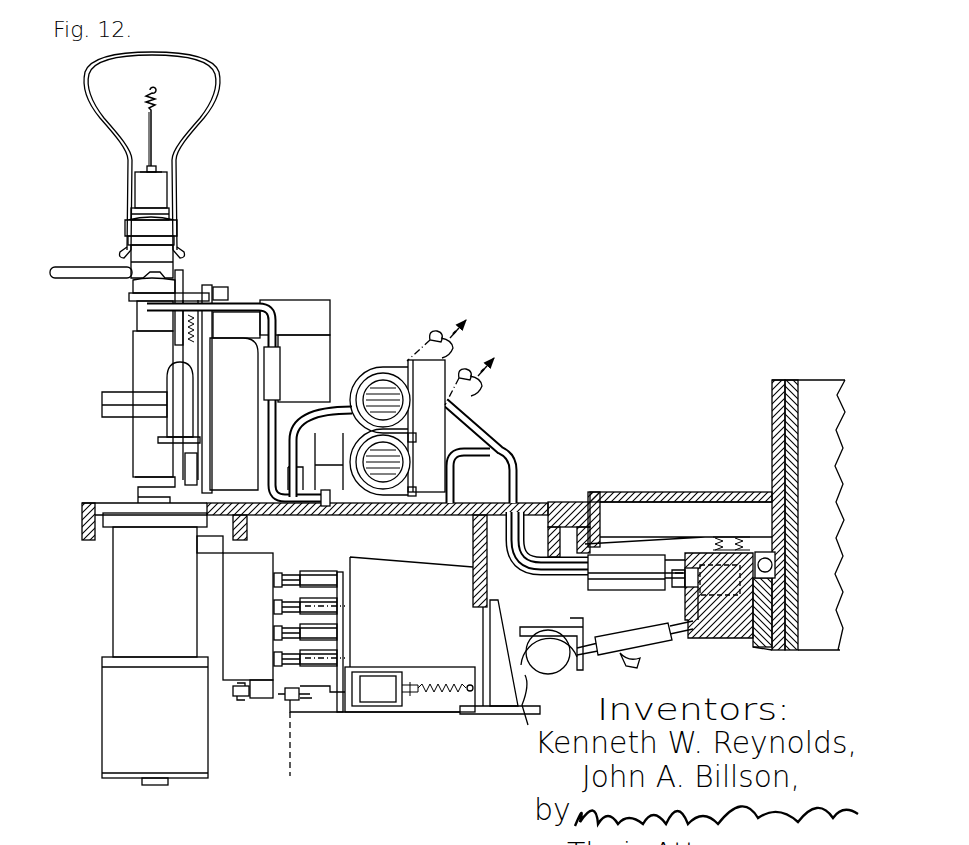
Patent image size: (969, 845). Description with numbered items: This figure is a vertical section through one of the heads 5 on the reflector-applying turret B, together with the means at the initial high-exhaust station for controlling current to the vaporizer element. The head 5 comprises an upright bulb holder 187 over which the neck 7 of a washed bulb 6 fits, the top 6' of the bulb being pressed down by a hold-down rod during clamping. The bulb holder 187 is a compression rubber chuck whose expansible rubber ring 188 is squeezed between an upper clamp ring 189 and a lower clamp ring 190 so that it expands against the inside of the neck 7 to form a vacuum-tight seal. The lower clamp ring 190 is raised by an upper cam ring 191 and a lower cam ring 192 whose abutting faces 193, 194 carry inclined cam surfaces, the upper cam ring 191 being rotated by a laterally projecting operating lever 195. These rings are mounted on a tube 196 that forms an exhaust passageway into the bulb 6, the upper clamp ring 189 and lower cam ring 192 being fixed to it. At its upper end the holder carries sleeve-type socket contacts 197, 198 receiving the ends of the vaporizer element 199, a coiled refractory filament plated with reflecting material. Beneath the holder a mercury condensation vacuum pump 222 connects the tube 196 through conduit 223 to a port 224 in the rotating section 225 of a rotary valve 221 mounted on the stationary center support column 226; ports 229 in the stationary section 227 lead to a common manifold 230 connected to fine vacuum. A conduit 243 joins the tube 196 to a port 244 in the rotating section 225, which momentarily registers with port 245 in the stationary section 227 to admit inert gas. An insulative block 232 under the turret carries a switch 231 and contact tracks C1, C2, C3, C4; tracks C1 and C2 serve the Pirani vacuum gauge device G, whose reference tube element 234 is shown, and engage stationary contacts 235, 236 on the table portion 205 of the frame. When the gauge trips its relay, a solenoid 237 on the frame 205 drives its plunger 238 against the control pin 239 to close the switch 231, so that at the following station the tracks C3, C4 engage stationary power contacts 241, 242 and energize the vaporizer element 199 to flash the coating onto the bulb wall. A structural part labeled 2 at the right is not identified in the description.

The wall 2 is at (798, 385).
The head 5 is at (118, 341).
The bulb 6 is at (161, 155).
The top of the bulb 6' is at (204, 46).
The bulb neck 7 is at (132, 220).
The bulb holder 187 is at (160, 192).
The expansible rubber ring 188 is at (170, 230).
The upper clamp ring 189 is at (170, 212).
The lower clamp ring 190 is at (174, 242).
The upper cam ring 191 is at (135, 264).
The lower cam ring 192 is at (133, 296).
The abutting face 193 is at (178, 266).
The abutting face 194 is at (135, 284).
The operating lever 195 is at (65, 268).
The tube 196 is at (138, 327).
The socket contact 197 is at (162, 170).
The socket contact 198 is at (158, 165).
The vaporizer element 199 is at (160, 100).
The supporting frame 205 is at (298, 745).
The rotary valve 221 is at (668, 601).
The mercury condensation vacuum pump 222 is at (125, 613).
The conduit 223 is at (300, 449).
The port 224 is at (683, 593).
The rotating section 225 is at (697, 553).
The stationary center support column 226 is at (757, 642).
The stationary section 227 is at (712, 642).
The ports 229 is at (686, 614).
The common manifold 230 is at (552, 675).
The switch 231 is at (258, 699).
The insulative block 232 is at (228, 596).
The reference tube element 234 is at (175, 384).
The stationary contact 235 is at (333, 587).
The stationary contact 236 is at (333, 640).
The solenoid 237 is at (380, 702).
The plunger 238 is at (292, 712).
The control pin 239 is at (240, 697).
The stationary contact 241 is at (343, 612).
The stationary contact 242 is at (338, 668).
The conduit 243 is at (282, 310).
The port 244 is at (722, 548).
The port 245 is at (738, 648).
The turret B is at (92, 503).
The Pirani type vacuum gauge device G is at (158, 425).
The electrical contact C1 is at (274, 583).
The electrical contact C2 is at (274, 636).
The electrical contact C3 is at (274, 610).
The electrical contact C4 is at (274, 662).